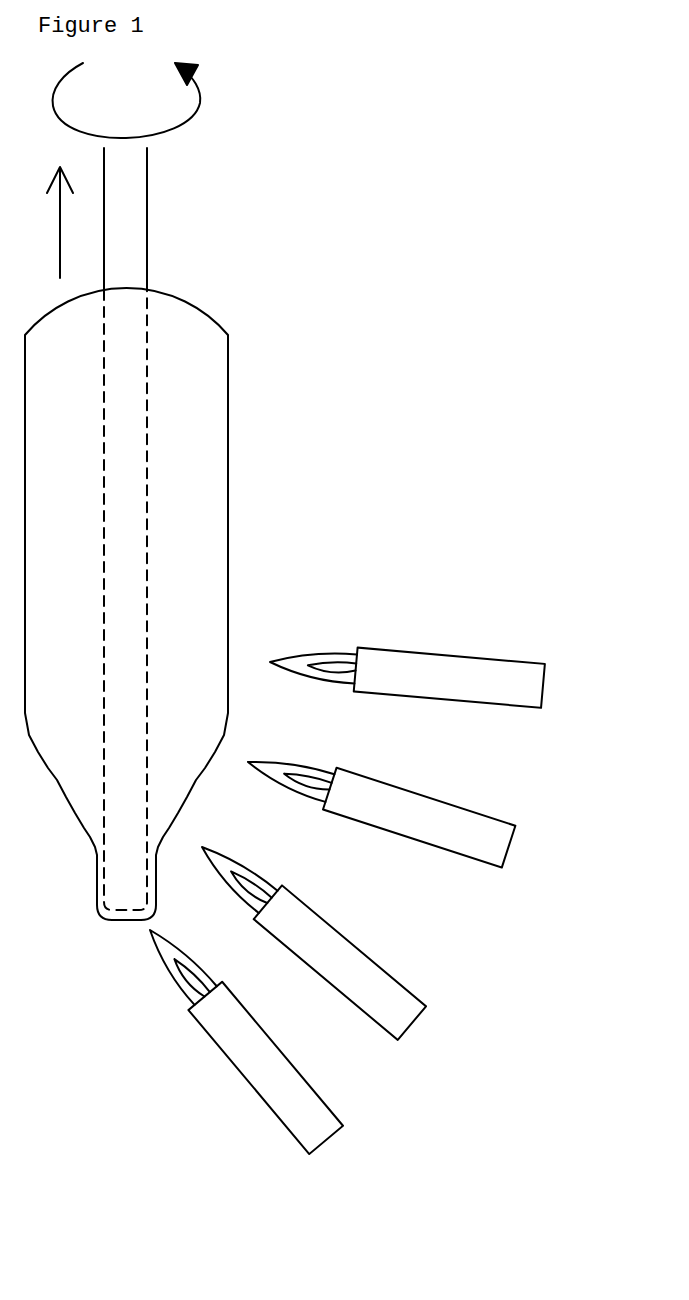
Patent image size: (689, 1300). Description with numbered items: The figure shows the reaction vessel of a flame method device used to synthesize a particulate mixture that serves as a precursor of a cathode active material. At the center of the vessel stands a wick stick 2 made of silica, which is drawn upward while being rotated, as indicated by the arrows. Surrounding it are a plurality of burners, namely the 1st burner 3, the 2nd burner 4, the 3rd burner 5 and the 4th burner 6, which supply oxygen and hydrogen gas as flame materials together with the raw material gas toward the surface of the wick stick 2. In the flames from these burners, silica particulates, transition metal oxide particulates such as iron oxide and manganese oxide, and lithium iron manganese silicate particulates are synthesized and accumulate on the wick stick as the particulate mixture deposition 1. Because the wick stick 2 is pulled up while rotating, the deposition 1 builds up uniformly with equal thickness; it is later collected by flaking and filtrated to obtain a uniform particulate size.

The particulate mixture deposition 1 is at (212, 418).
The wick stick 2 is at (140, 222).
The 1st burner 3 is at (317, 1138).
The 2nd burner 4 is at (400, 1018).
The 3rd burner 5 is at (498, 848).
The 4th burner 6 is at (530, 692).